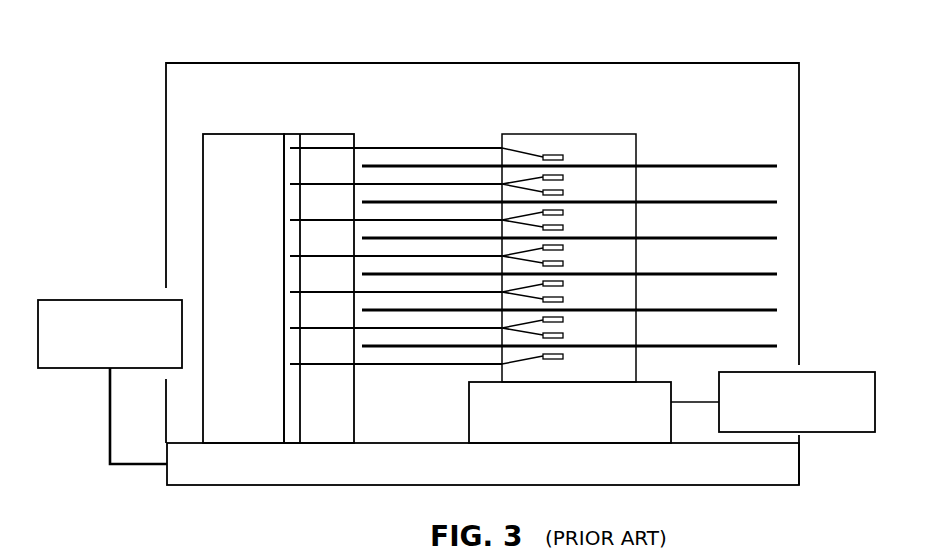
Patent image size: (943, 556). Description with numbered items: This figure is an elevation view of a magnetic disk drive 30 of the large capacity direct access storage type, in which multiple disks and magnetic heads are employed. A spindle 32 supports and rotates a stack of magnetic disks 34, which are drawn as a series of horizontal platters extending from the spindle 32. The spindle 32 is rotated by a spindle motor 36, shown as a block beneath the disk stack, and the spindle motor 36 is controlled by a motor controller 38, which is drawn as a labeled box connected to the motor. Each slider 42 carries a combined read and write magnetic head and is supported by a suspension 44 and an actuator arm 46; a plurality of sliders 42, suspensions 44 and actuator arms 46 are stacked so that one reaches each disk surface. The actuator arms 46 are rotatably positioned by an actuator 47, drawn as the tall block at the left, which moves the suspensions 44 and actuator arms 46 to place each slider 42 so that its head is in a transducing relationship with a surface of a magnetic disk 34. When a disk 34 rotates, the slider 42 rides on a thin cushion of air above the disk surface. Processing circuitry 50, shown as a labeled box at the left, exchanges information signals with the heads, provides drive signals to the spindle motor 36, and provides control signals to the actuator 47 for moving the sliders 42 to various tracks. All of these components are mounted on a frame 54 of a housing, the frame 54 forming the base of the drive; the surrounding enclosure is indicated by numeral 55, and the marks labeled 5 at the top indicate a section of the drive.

The section line marker 5 is at (260, 15).
The magnetic disk drive 30 is at (686, 137).
The spindle 32 is at (624, 134).
The magnetic disk 34 is at (777, 166).
The spindle motor 36 is at (585, 425).
The motor controller 38 is at (833, 433).
The slider 42 is at (563, 177).
The suspension 44 is at (530, 191).
The actuator arm 46 is at (468, 184).
The actuator 47 is at (233, 133).
The processing circuitry 50 is at (80, 300).
The frame 54 is at (220, 486).
The housing 55 is at (706, 63).